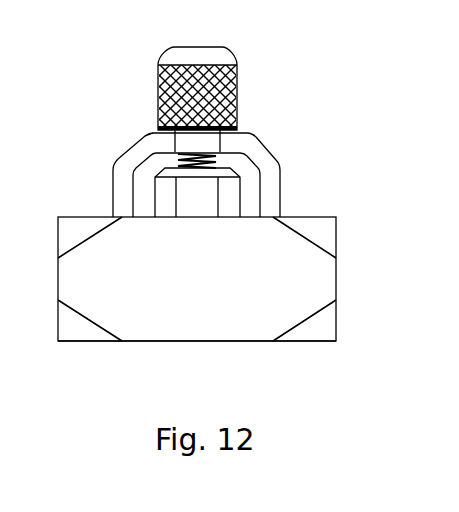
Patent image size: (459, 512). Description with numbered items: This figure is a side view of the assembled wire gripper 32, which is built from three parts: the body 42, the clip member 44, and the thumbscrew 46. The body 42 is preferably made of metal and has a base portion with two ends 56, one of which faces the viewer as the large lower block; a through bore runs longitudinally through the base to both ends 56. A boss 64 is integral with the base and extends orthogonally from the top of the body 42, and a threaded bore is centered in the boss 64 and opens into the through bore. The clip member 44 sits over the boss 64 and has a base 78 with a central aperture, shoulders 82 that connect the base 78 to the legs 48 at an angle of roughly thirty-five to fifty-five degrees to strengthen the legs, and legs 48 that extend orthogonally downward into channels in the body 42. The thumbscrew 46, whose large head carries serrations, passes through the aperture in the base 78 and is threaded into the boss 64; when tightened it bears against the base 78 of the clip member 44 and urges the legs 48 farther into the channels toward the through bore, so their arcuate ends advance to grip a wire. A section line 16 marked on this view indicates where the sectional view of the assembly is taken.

The section line 16- 16 is at (292, 369).
The wire gripper 32 is at (332, 98).
The body 42 is at (302, 341).
The clip member 44 is at (281, 163).
The thumbscrew 46 is at (158, 100).
The legs 48 is at (281, 203).
The ends 56 is at (336, 277).
The boss 64 is at (155, 202).
The base 78 is at (156, 143).
The shoulders 82 is at (262, 146).